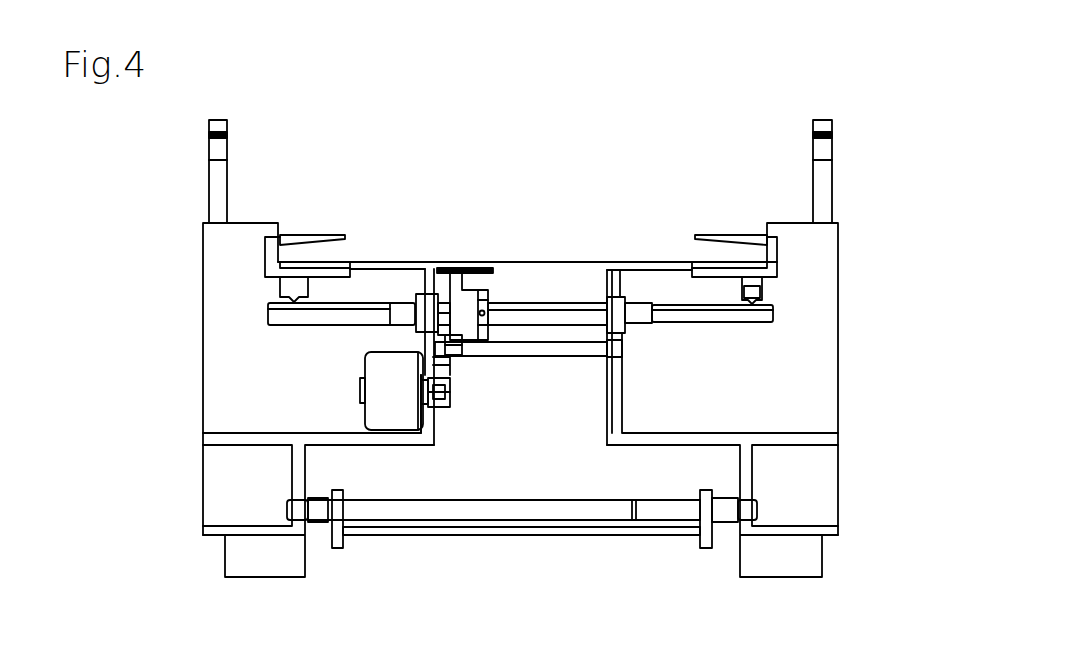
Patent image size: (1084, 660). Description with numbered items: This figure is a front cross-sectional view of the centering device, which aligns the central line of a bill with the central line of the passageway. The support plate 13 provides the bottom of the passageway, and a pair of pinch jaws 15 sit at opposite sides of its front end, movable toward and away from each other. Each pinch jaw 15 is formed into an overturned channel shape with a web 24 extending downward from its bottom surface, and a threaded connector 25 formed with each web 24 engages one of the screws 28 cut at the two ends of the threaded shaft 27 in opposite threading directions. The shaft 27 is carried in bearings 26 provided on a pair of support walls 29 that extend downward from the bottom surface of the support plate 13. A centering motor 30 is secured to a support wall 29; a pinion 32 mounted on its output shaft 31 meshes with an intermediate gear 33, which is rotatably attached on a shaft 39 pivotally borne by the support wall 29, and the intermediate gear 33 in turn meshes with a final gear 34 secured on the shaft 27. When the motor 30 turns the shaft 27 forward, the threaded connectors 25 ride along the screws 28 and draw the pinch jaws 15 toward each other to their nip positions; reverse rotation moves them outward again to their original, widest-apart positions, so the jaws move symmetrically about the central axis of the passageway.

The support plate 13 is at (607, 262).
The pinch jaw 15 is at (314, 243).
The web 24 is at (773, 283).
The threaded connector 25 is at (768, 299).
The bearing 26 is at (428, 262).
The threaded shaft 27 is at (563, 305).
The screw 28 is at (755, 324).
The support wall 29 is at (433, 437).
The centering motor 30 is at (370, 368).
The output shaft 31 is at (455, 396).
The pinion 32 is at (455, 410).
The intermediate gear 33 is at (462, 368).
The final gear 34 is at (466, 268).
The shaft 39 is at (598, 360).